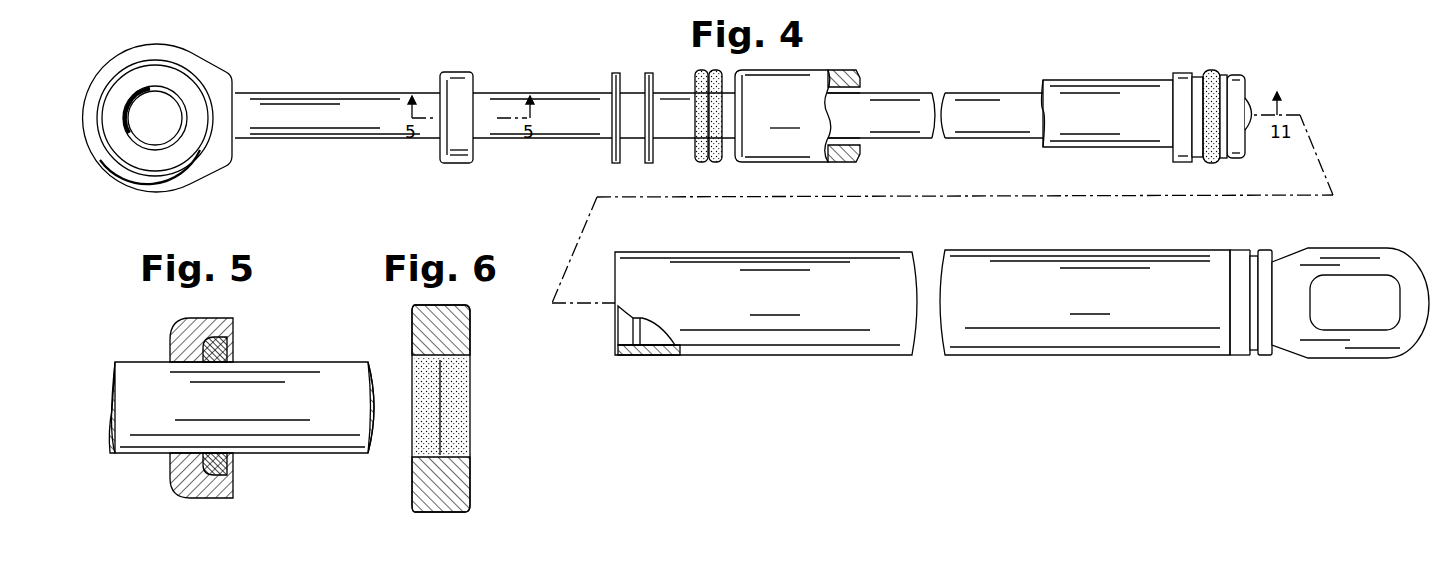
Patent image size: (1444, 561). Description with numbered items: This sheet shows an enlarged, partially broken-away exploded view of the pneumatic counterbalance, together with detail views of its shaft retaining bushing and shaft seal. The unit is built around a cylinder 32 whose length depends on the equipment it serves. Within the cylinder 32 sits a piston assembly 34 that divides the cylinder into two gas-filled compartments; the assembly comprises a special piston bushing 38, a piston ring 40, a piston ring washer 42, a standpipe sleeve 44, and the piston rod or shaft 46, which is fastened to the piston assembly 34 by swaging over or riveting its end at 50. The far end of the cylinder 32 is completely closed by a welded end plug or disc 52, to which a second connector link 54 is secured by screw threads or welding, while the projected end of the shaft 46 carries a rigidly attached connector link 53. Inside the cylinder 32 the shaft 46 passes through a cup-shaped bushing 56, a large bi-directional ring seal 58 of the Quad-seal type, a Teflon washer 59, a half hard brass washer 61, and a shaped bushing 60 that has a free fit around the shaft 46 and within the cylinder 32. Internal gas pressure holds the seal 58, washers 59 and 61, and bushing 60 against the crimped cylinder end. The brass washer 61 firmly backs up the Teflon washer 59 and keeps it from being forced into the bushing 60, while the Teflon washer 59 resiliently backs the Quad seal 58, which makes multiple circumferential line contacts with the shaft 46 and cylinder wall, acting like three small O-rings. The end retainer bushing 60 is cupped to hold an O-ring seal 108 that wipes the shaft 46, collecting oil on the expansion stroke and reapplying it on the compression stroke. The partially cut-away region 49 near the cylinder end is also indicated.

In FIG. 4, the cylinder 32 is at (875, 258).
In FIG. 4, the piston assembly 34 is at (1196, 98).
In FIG. 4, the piston bushing 38 is at (1184, 73).
In FIG. 4, the piston ring 40 is at (1209, 70).
In FIG. 4, the piston ring washer 42 is at (1223, 75).
In FIG. 4, the standpipe sleeve 44 is at (1075, 82).
In FIG. 4, the piston rod or shaft 46 is at (364, 94).
In FIG. 5, the piston rod or shaft 46 is at (330, 370).
In FIG. 4, the recess 49 is at (622, 342).
In FIG. 4, the swaged or riveted end 50 is at (1250, 128).
In FIG. 4, the end plug or disc 52 is at (1240, 263).
In FIG. 4, the connector link 53 is at (228, 70).
In FIG. 4, the second connector link 54 is at (1367, 252).
In FIG. 4, the cup-shaped bushing 56 is at (803, 72).
In FIG. 4, the bi-directional ring seal 58 is at (697, 76).
In FIG. 6, the bi-directional ring seal 58 is at (452, 330).
In FIG. 4, the Teflon washer 59 is at (649, 73).
In FIG. 4, the shaped bushing 60 is at (458, 72).
In FIG. 5, the shaped bushing 60 is at (180, 330).
In FIG. 4, the half hard brass washer 61 is at (614, 73).
In FIG. 5, the O-ring seal 108 is at (222, 344).